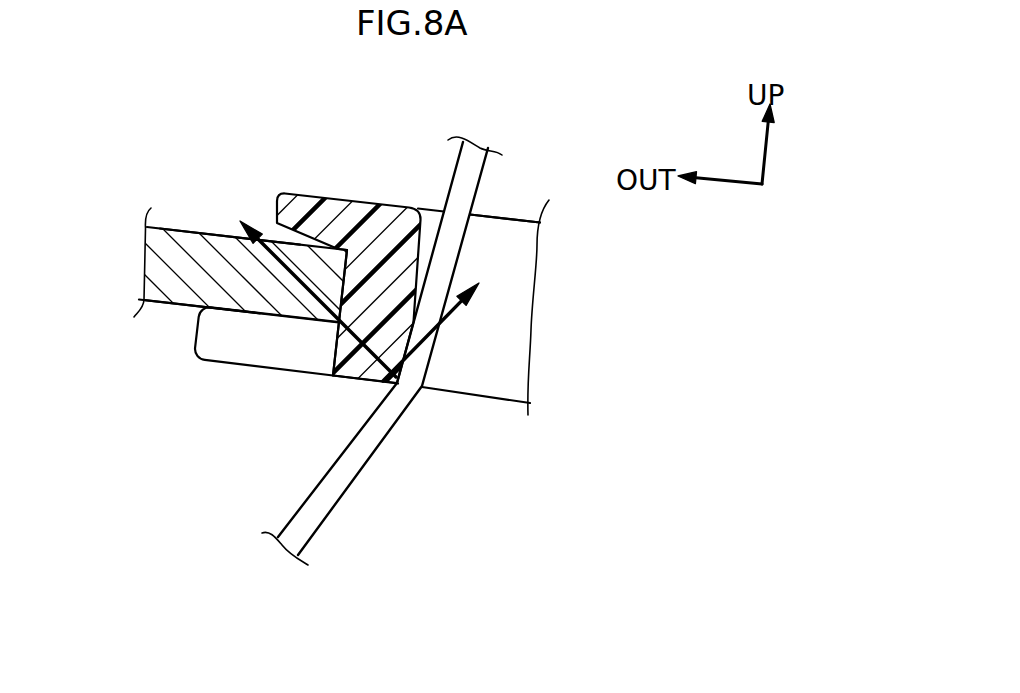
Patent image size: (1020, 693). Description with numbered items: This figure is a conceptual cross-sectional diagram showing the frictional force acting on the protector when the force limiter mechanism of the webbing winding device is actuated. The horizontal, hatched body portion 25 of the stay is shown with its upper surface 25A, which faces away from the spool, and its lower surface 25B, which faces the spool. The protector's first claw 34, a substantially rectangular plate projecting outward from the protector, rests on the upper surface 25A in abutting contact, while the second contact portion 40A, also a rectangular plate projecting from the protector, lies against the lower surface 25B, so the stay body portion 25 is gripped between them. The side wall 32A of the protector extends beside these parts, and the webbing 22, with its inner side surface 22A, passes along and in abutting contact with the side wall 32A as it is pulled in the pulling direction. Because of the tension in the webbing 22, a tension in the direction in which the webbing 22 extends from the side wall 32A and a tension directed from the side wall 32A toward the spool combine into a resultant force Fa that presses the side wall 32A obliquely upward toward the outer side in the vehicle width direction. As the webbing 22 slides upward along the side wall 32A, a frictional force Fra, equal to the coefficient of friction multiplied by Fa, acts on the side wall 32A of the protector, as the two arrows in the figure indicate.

The webbing 22 is at (482, 171).
The inner side surface 22A is at (452, 178).
The body portion 25 is at (180, 228).
The upper surface 25A is at (230, 236).
The lower surface 25B is at (162, 305).
The side wall 32A is at (427, 271).
The first claw 34 is at (323, 193).
The second contact portion 40A is at (192, 333).
The resultant force Fa is at (308, 273).
The frictional force Fra is at (433, 352).